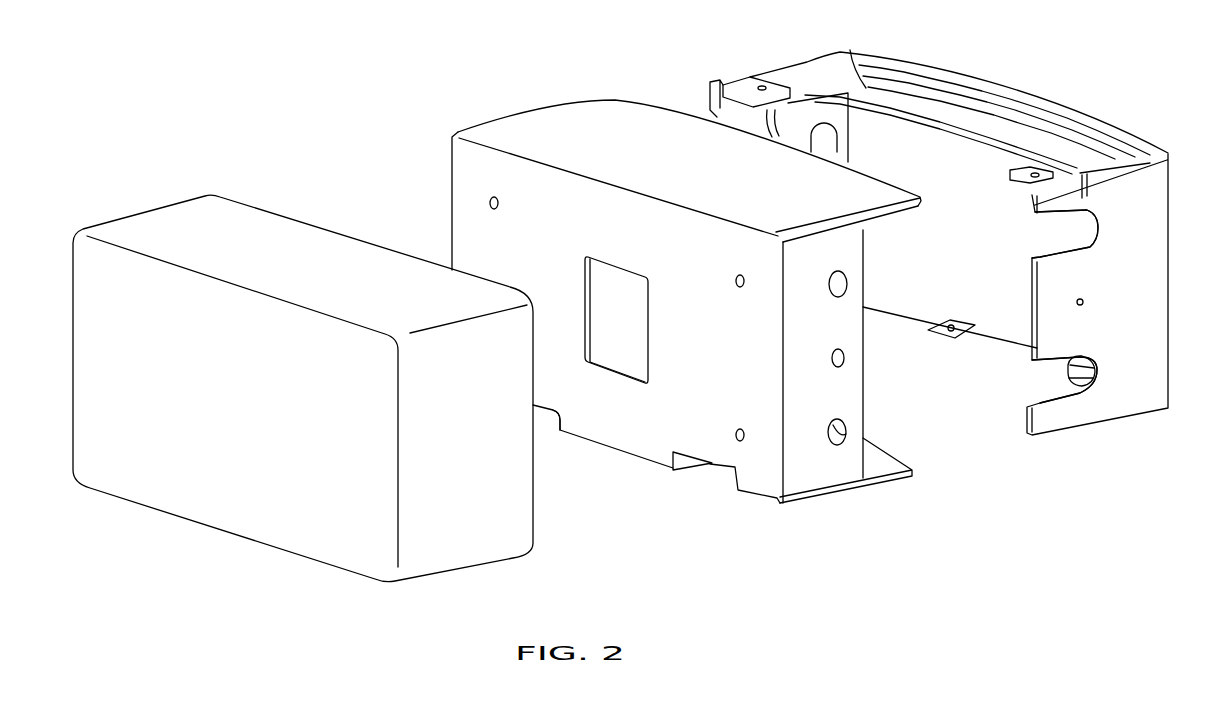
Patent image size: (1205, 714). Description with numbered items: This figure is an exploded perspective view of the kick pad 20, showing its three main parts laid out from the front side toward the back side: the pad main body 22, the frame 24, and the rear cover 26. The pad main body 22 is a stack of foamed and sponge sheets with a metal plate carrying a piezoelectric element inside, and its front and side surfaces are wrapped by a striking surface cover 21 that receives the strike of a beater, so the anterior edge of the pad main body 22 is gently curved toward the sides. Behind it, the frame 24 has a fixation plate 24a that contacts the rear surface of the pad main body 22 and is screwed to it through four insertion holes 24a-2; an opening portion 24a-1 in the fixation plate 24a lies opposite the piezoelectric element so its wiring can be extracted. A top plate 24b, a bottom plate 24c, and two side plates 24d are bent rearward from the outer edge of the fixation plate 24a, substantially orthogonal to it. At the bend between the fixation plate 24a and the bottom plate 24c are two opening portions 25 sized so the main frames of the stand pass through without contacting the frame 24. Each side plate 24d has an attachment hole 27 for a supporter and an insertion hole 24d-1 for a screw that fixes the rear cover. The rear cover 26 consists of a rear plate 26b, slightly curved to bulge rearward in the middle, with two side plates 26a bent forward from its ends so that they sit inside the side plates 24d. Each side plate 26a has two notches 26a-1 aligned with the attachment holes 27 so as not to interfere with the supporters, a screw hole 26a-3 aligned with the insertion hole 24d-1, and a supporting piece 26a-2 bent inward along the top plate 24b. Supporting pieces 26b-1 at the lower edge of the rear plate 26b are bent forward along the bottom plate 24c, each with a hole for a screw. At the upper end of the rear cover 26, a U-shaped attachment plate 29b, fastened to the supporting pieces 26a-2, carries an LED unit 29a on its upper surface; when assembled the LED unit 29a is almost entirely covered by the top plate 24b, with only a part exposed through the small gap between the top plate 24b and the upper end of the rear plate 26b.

The kick pad 20 is at (263, 88).
The striking surface cover 21 is at (240, 487).
The pad main body 22 is at (283, 197).
The frame 24 is at (441, 153).
The fixation plate 24a is at (640, 423).
The opening portion 24a-1 is at (648, 325).
The insertion holes 24a-2 is at (500, 205).
The top plate 24b is at (850, 178).
The bottom plate 24c is at (883, 480).
The side plates 24d is at (452, 203).
The insertion hole 24d-1 is at (845, 358).
The opening portions 25 is at (543, 423).
The rear cover 26 is at (703, 80).
The side plates 26a is at (790, 57).
The notches 26a-1 is at (1042, 237).
The supporting piece 26a-2 is at (750, 77).
The screw hole 26a-3 is at (1085, 301).
The rear plate 26b is at (994, 336).
The supporting pieces 26b-1 is at (1073, 356).
The attachment holes 27 is at (848, 283).
The LED unit 29a is at (1055, 94).
The attachment plate 29b is at (967, 117).